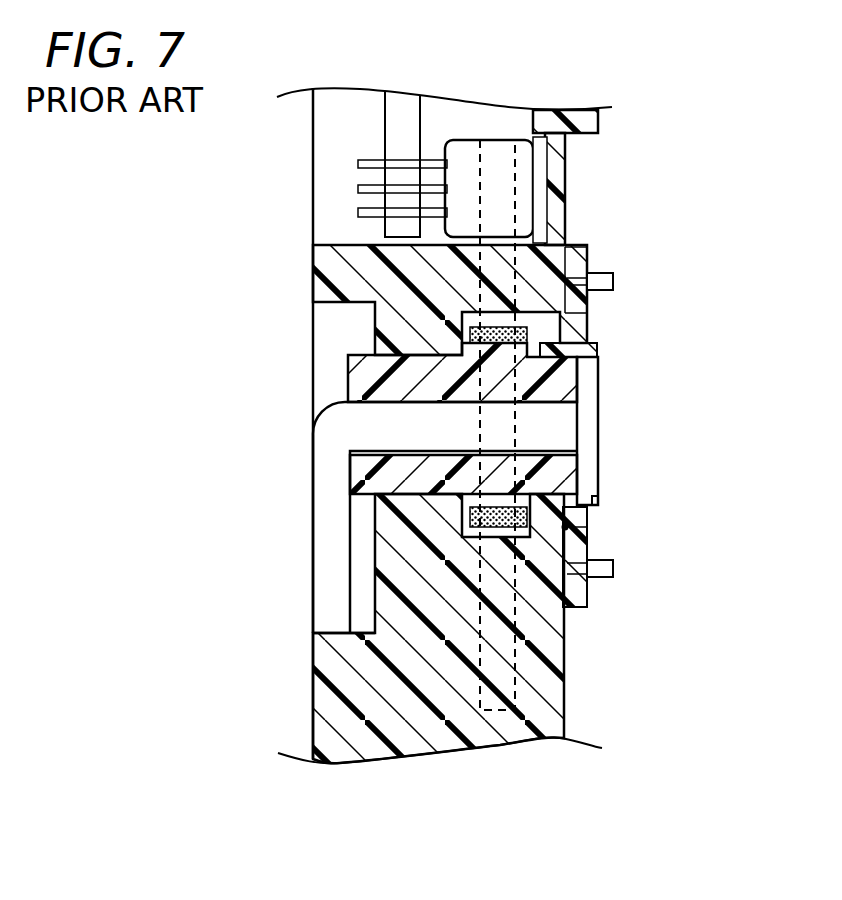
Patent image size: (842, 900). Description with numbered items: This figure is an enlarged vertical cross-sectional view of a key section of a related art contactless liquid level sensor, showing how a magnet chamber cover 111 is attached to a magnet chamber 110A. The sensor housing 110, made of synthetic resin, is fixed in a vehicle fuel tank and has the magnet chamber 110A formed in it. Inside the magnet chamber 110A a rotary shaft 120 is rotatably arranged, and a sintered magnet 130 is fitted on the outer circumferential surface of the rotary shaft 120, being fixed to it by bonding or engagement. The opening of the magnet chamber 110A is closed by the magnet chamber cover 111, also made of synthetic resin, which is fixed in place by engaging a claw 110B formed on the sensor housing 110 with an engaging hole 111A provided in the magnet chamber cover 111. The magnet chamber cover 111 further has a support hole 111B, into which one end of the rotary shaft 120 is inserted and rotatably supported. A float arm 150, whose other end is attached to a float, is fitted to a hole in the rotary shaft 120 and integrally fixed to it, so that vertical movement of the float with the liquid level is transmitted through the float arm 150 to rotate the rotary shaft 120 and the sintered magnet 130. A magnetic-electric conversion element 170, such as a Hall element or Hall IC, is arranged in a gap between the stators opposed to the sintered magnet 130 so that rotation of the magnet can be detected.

The sensor housing 110 is at (558, 697).
The magnet chamber 110A is at (598, 502).
The claw 110B is at (612, 284).
The magnet chamber cover 111 is at (598, 478).
The engaging hole 111A is at (587, 293).
The support hole 111B is at (577, 383).
The rotary shaft 120 is at (447, 348).
The sintered magnet 130 is at (525, 331).
The float arm 150 is at (333, 543).
The magnetic-electric conversion element 170 is at (463, 160).